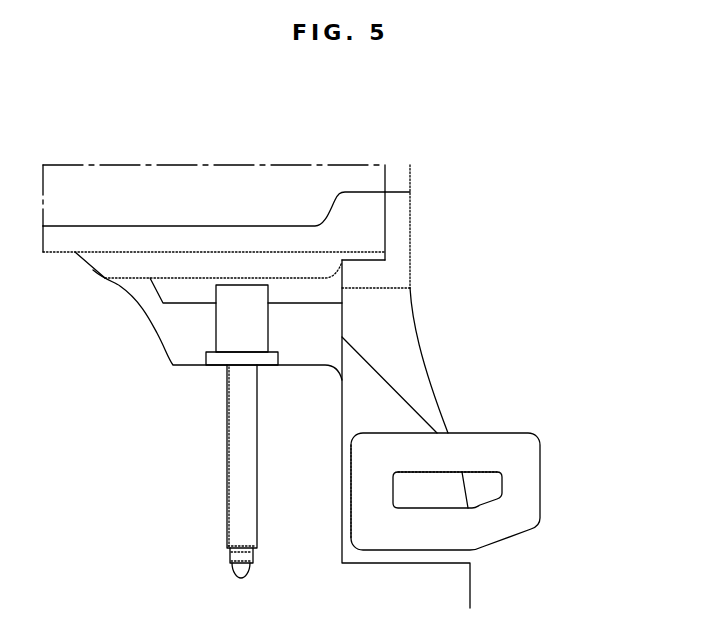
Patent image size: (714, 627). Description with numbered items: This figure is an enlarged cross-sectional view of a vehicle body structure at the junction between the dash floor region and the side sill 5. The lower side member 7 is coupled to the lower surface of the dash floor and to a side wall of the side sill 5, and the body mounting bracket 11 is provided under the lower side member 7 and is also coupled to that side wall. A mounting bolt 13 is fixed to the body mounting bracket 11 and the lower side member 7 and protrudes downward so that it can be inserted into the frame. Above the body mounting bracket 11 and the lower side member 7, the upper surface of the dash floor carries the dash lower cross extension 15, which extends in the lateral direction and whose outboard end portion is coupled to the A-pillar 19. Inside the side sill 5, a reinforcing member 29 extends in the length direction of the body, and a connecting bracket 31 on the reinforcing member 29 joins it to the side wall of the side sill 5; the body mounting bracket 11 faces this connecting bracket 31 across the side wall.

The side sill 5 is at (403, 337).
The lower side member 7 is at (172, 290).
The body mounting bracket 11 is at (180, 338).
The mounting bolt 13 is at (235, 480).
The dash lower cross extension 15 is at (185, 240).
The A-pillar 19 is at (403, 178).
The reinforcing member 29 is at (528, 483).
The connecting bracket 31 is at (377, 403).